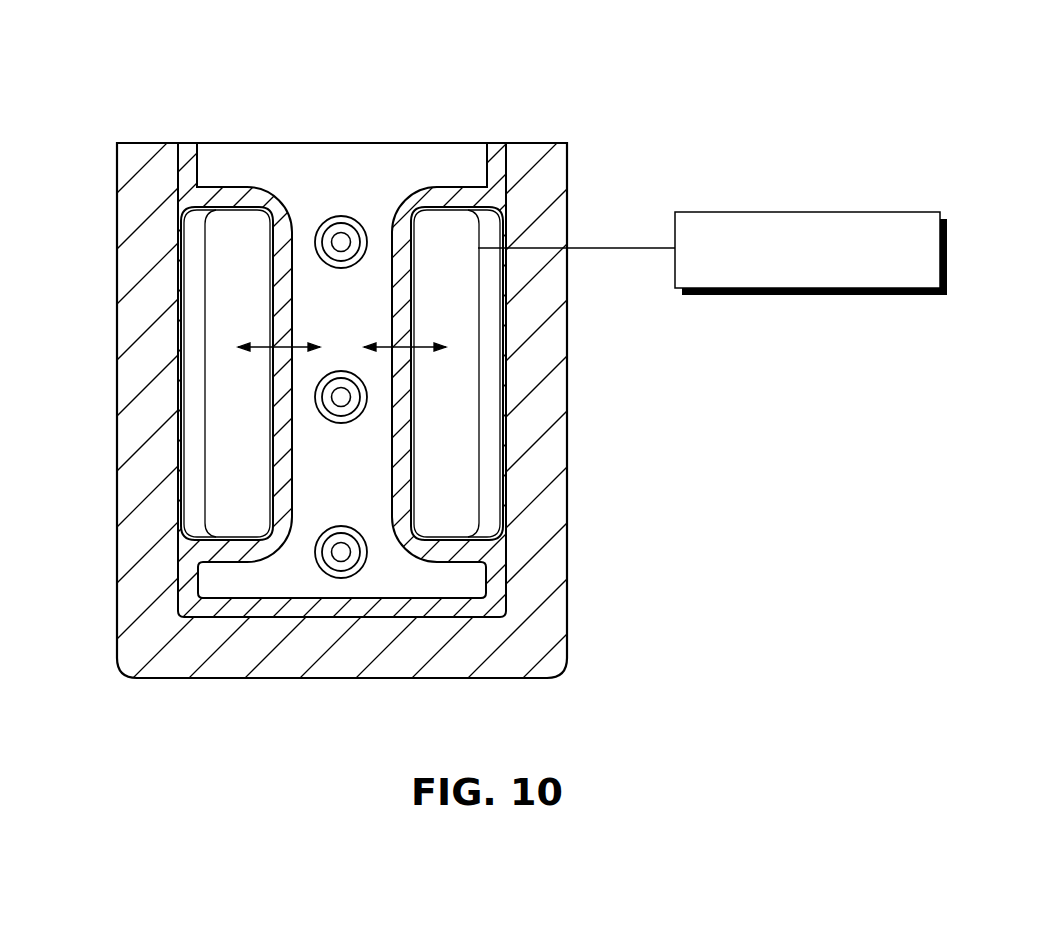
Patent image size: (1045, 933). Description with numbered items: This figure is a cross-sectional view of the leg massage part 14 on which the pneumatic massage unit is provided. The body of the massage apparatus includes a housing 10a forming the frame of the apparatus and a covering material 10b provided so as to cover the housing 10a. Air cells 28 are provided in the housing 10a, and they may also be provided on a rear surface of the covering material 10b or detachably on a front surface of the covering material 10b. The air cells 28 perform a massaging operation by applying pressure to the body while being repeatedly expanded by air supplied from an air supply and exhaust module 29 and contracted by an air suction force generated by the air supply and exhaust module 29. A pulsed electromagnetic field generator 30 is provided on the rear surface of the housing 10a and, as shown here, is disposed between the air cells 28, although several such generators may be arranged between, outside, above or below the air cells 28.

The leg massage part 14 is at (580, 425).
The housing 10a is at (553, 498).
The covering material 10b is at (287, 408).
The air cells 28 is at (242, 230).
The air supply and exhaust module 29 is at (806, 212).
The pulsed electromagnetic field generator 30 is at (341, 206).